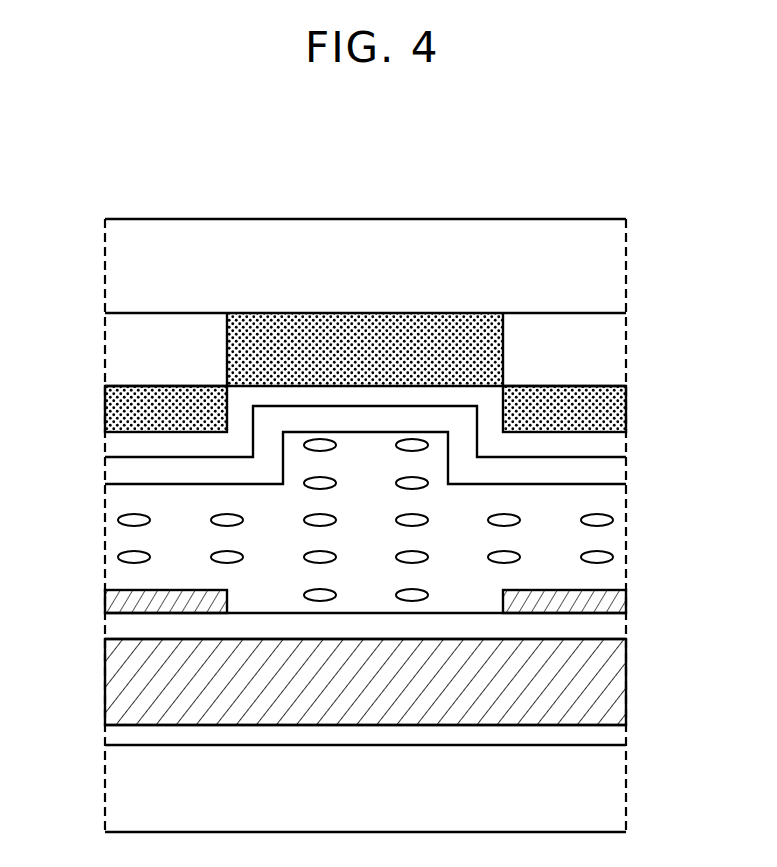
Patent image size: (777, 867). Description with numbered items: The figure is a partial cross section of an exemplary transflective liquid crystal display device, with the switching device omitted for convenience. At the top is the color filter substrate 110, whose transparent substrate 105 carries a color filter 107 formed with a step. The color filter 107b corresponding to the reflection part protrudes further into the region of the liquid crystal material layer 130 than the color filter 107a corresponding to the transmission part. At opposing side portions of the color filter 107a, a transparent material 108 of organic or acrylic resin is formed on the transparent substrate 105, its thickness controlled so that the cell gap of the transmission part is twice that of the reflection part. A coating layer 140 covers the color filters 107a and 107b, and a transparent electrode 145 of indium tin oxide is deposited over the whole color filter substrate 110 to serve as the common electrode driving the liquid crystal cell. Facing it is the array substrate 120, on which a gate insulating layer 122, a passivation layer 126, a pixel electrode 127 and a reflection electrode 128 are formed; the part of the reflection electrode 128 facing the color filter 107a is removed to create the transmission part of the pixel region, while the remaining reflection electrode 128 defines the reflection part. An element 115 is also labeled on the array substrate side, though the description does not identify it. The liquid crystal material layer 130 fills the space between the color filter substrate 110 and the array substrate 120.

The transparent substrate 105 is at (618, 273).
The transparent material 108 is at (618, 335).
The color filter corresponding to the transmission part 107a is at (495, 362).
The color filter corresponding to the reflection part 107b is at (618, 407).
The color filter 107 is at (709, 352).
The color filter substrate 110 is at (105, 220).
The coating layer 140 is at (618, 437).
The transparent electrode 145 is at (618, 466).
The liquid crystal material layer 130 is at (105, 488).
The reflection electrode 128 is at (620, 598).
The pixel electrode 127 is at (618, 623).
The passivation layer 126 is at (622, 678).
The gate insulating layer 122 is at (618, 733).
The substrate 115 is at (618, 796).
The array substrate 120 is at (105, 592).